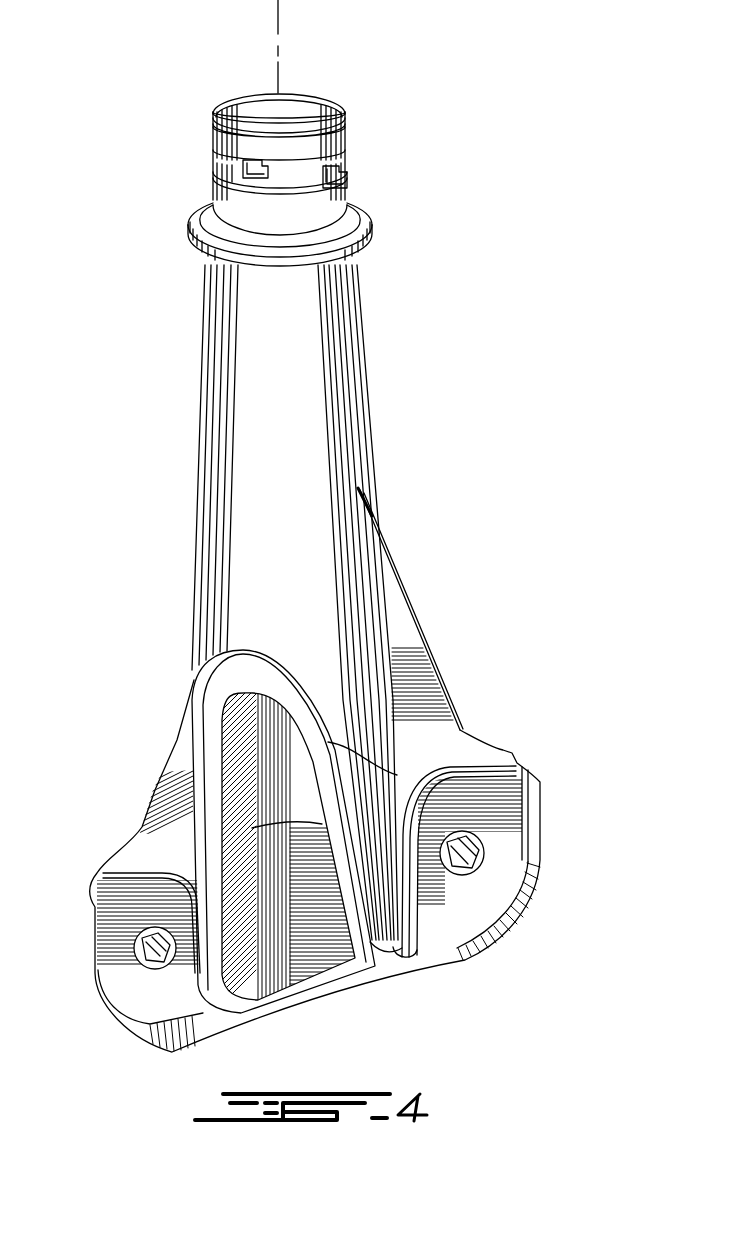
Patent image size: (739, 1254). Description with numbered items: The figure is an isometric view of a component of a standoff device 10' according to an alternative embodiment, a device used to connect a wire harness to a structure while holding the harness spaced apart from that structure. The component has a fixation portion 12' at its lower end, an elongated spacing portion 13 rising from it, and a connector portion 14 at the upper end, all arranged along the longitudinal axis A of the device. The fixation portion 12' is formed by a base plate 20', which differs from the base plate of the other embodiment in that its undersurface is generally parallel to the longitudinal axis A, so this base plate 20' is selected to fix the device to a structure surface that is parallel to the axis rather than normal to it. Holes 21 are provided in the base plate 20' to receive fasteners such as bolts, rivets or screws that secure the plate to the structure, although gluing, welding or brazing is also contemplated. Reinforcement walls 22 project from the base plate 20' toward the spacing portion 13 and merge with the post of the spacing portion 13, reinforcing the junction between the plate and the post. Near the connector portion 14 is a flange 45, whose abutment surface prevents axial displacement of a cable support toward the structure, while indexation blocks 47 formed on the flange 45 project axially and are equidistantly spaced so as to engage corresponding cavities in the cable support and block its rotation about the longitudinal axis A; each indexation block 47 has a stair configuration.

The longitudinal axis A is at (278, 33).
The connector portion 14 is at (186, 133).
The indexation blocks 47 is at (238, 170).
The flange 45 is at (378, 232).
The spacing portion 13 is at (168, 421).
The standoff device 10' is at (432, 573).
The reinforcement walls 22 is at (440, 665).
The fixation portion 12' is at (356, 851).
The holes 21 is at (136, 955).
The base plate 20' is at (357, 956).